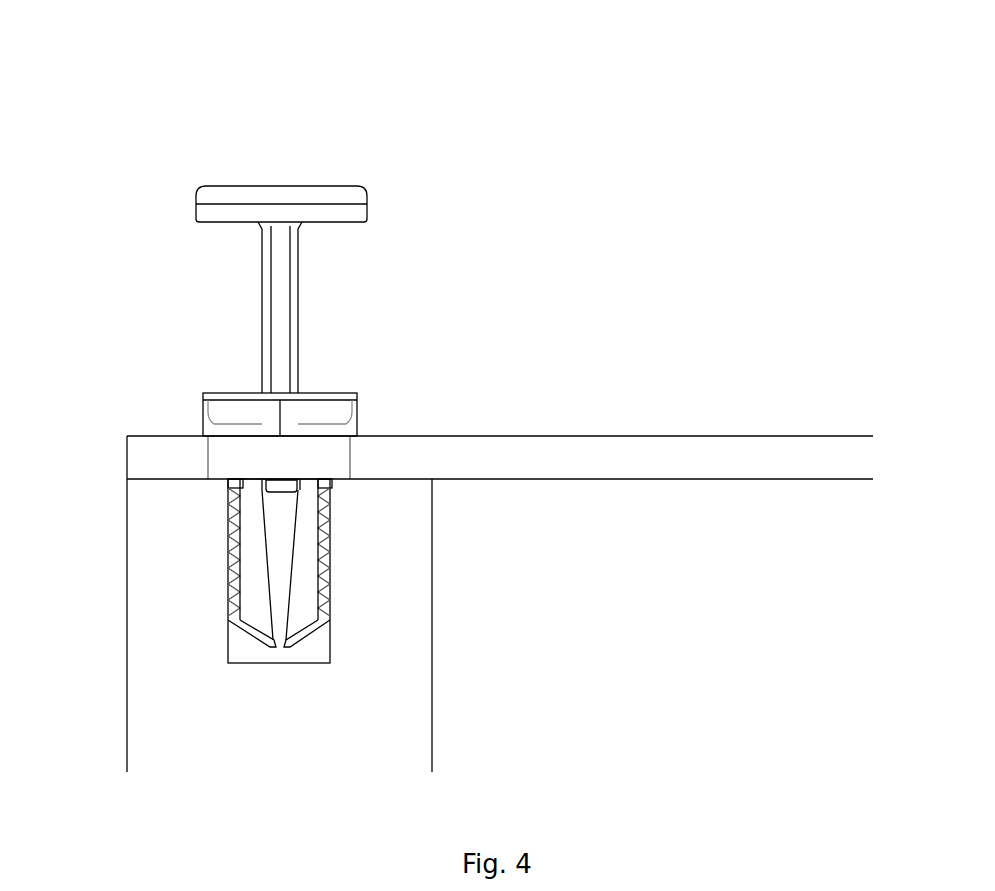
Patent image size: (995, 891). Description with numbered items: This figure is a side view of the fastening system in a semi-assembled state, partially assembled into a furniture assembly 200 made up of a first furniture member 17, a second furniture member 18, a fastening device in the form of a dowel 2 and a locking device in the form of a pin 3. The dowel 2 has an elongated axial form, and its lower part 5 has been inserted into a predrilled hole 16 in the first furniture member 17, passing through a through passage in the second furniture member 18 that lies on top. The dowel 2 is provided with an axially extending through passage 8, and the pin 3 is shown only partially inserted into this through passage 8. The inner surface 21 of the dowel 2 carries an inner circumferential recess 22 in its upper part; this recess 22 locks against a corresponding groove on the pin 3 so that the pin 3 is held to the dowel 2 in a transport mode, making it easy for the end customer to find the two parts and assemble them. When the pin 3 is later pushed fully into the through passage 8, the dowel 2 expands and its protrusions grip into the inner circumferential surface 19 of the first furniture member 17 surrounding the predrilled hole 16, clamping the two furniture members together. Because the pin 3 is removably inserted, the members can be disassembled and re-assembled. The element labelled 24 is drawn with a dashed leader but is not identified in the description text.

The furniture assembly 200 is at (96, 76).
The locking device 3 is at (363, 191).
The fastening device 2 is at (350, 408).
The sealing lip 24 is at (265, 455).
The second furniture member 18 is at (697, 452).
The first furniture member 17 is at (410, 617).
The predrilled hole 16 is at (318, 657).
The inner circumferential surface 19 is at (236, 555).
The inner surface 21 is at (240, 532).
The lower part 5 is at (237, 603).
The through passage 8 is at (283, 546).
The inner circumferential recess 22 is at (297, 493).